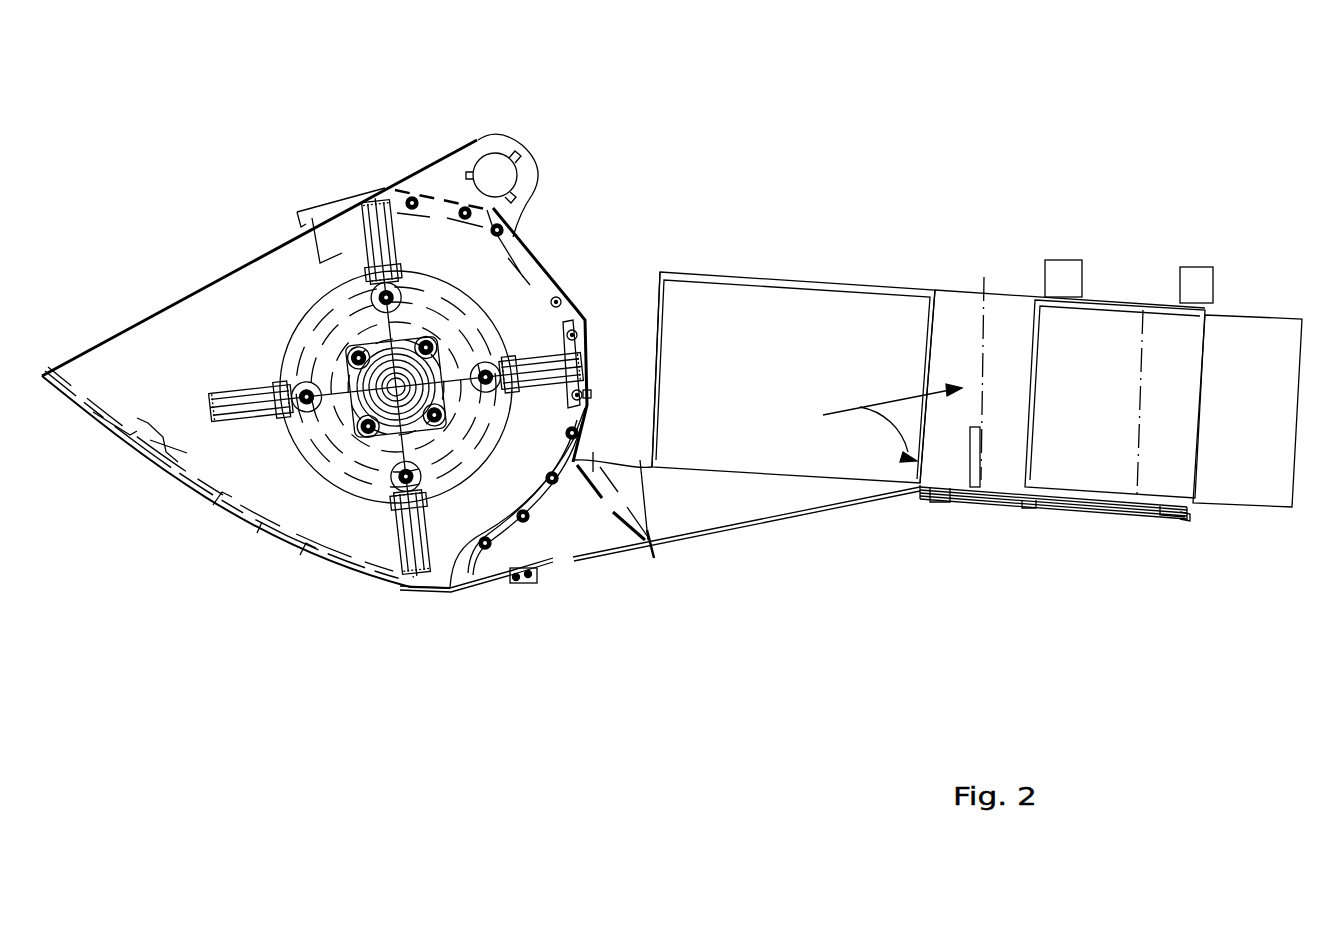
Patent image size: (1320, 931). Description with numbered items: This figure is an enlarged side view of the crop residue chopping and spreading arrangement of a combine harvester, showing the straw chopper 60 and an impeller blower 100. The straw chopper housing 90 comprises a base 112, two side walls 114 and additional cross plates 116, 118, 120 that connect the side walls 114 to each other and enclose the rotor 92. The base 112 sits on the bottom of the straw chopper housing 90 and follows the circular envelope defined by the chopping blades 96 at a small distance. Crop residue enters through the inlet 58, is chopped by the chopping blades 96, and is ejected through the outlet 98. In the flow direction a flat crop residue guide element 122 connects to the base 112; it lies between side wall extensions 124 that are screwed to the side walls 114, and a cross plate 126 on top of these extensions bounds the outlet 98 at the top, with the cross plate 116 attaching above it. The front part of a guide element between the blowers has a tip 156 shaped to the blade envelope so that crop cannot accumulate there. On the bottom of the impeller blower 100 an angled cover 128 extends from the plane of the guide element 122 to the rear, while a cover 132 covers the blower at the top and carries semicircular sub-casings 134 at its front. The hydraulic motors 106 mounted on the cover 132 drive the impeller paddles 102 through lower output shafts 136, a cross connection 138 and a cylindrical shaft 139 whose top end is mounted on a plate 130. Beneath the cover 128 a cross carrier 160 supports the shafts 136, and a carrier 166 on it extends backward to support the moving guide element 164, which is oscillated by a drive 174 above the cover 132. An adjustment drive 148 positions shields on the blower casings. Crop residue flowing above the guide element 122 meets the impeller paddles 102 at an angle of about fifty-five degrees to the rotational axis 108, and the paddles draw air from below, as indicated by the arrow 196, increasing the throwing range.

The inlet 58 is at (193, 338).
The straw chopper 60 is at (416, 650).
The straw chopper housing 90 is at (560, 300).
The rotor 92 is at (432, 305).
The chopping blades 96 is at (545, 345).
The outlet 98 is at (520, 537).
The impeller blower 100 is at (1068, 556).
The impeller paddles 102 is at (1186, 500).
The hydraulic motors 106 is at (1000, 408).
The rotational axis 108 is at (980, 383).
The base 112 is at (430, 587).
The side walls 114 is at (264, 326).
The cross plate 116 is at (580, 337).
The cross plate 118 is at (537, 300).
The cross plate 120 is at (160, 480).
The crop residue guide element 122 is at (587, 557).
The side wall extensions 124 is at (590, 536).
The cross plate 126 is at (588, 457).
The cover 128 is at (843, 505).
The plate 130 is at (1123, 310).
The cover 132 is at (753, 277).
The sub-casings 134 is at (647, 300).
The output shafts 136 is at (997, 497).
The cross connection 138 is at (940, 502).
The shaft 139 is at (927, 337).
The adjustment drive 148 is at (1063, 273).
The tip 156 is at (545, 497).
The cross carrier 160 is at (973, 503).
The guide element 164 is at (1260, 327).
The carrier 166 is at (1163, 510).
The drive 174 is at (1195, 282).
The arrow 196 is at (1140, 582).